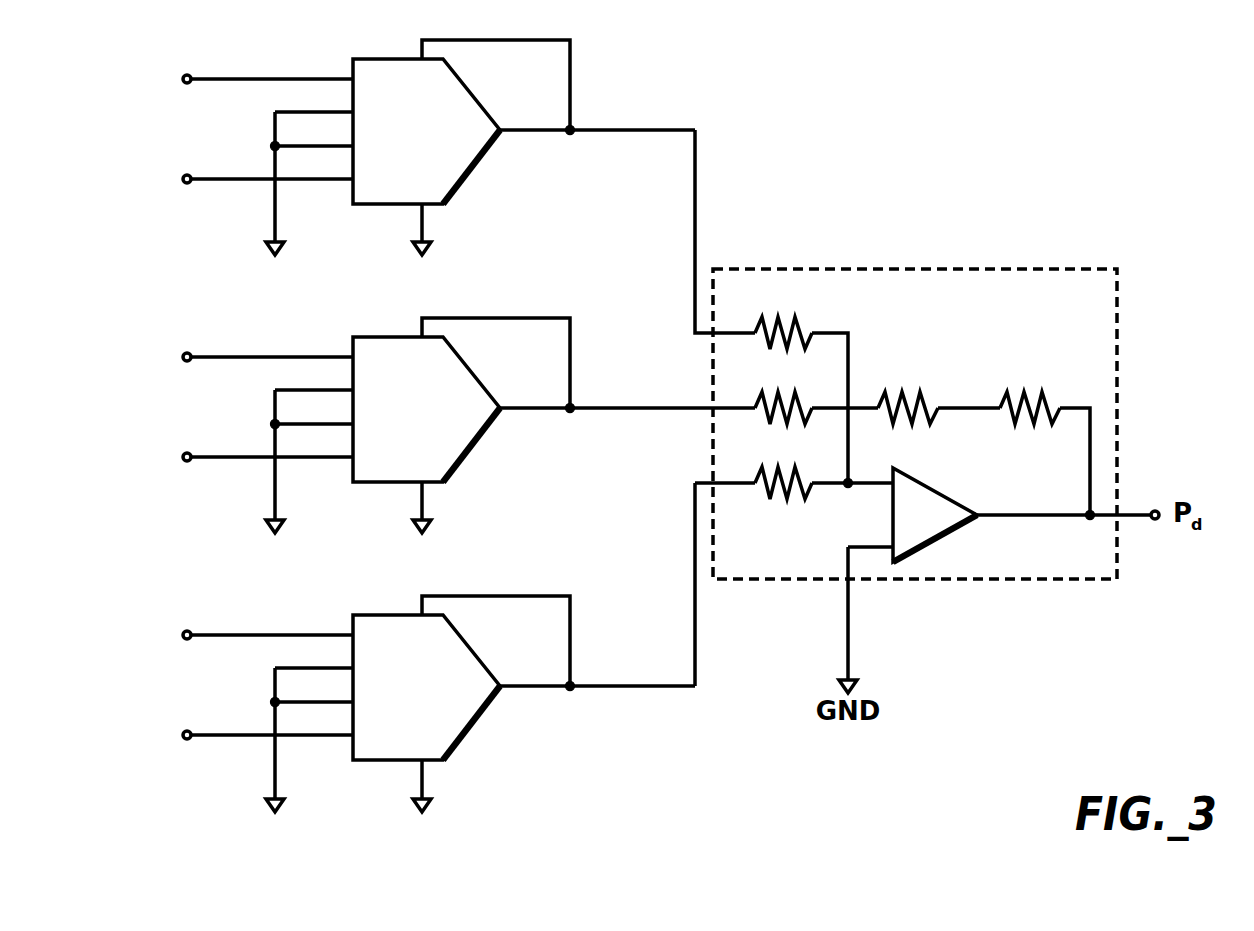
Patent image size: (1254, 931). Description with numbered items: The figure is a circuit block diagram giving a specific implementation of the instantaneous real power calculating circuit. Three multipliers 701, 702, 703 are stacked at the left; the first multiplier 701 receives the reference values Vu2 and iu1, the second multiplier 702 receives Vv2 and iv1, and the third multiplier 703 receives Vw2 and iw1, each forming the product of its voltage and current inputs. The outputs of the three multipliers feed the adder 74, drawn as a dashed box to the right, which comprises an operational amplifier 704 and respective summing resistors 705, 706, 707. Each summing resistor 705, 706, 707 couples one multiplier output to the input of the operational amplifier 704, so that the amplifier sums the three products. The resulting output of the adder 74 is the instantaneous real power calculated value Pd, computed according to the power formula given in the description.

The multiplier 701 is at (397, 59).
The multiplier 702 is at (397, 337).
The multiplier 703 is at (397, 615).
The operational amplifier 704 is at (940, 538).
The summing resistor 705 is at (780, 330).
The summing resistor 706 is at (807, 413).
The summing resistor 707 is at (802, 494).
The adder 74 is at (898, 584).